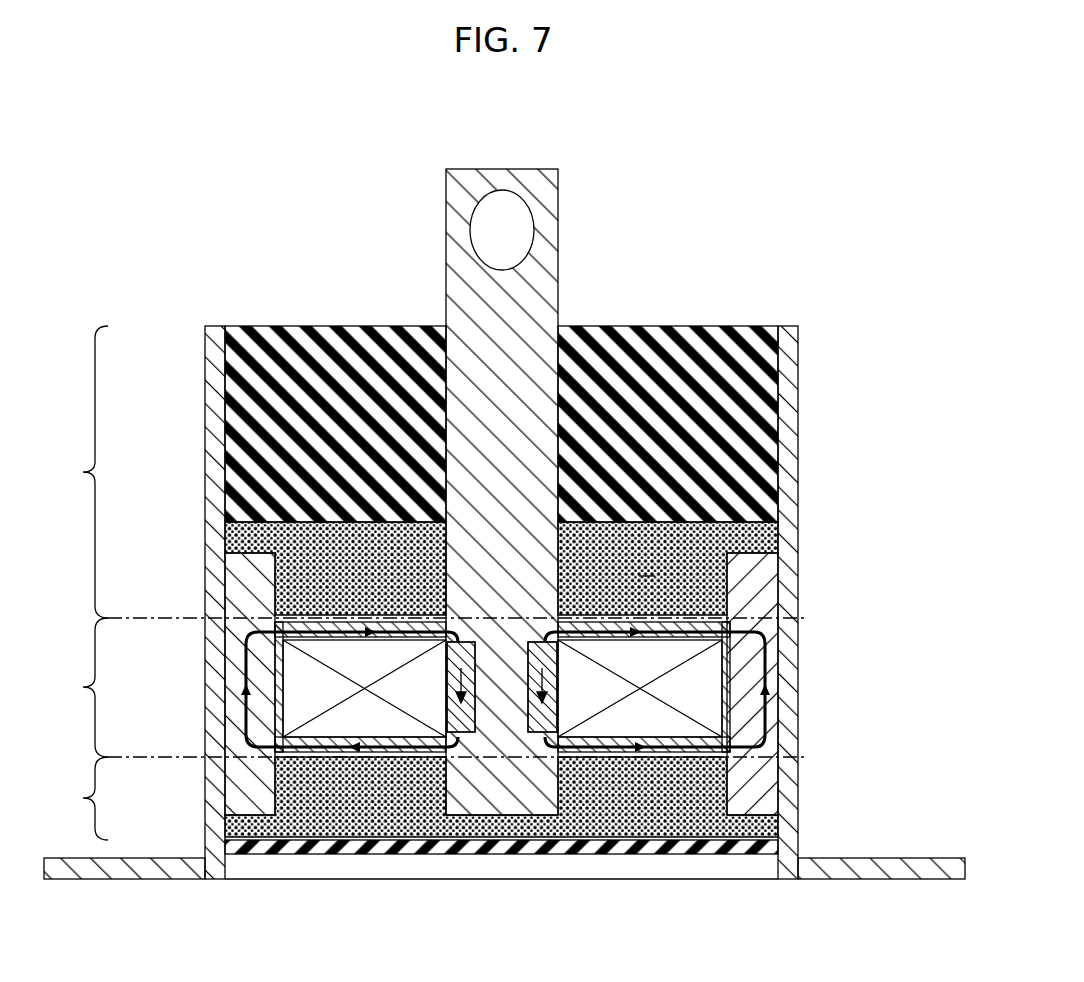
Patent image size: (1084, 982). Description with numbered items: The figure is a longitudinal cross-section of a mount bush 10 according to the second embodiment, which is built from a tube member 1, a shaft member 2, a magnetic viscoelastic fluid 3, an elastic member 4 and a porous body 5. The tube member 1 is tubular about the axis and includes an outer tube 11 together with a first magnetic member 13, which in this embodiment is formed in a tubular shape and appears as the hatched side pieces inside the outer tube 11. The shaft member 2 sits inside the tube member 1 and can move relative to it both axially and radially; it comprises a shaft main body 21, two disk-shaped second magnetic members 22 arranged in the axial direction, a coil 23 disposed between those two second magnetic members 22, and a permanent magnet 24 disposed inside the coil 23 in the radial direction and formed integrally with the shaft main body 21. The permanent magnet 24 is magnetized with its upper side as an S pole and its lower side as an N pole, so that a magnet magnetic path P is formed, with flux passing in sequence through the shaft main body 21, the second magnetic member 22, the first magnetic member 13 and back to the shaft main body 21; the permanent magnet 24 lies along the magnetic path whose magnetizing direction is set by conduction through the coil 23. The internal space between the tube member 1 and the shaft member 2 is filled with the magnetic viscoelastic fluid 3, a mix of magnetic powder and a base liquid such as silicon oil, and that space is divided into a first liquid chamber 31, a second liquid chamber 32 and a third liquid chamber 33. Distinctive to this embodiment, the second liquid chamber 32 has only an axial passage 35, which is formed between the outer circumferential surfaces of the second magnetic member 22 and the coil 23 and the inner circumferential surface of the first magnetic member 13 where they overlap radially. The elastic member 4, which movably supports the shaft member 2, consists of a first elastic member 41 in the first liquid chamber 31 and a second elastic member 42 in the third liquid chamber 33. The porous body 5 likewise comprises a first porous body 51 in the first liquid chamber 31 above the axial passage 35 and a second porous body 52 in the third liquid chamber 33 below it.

The tube member 1 is at (504, 554).
The shaft member 2 is at (524, 453).
The magnetic viscoelastic fluid 3 is at (372, 558).
The elastic member 4 is at (544, 595).
The porous body 5 is at (570, 658).
The mount bush 10 is at (752, 197).
The outer tube 11 is at (906, 858).
The first magnetic member 13 is at (770, 571).
The shaft main body 21 is at (538, 307).
The second magnetic member 22 is at (680, 625).
The coil 23 is at (385, 728).
The permanent magnet 24 is at (466, 728).
The first liquid chamber 31 is at (72, 489).
The second liquid chamber 32 is at (72, 703).
The third liquid chamber 33 is at (72, 814).
The axial passage 35 is at (733, 714).
The first elastic member 41 is at (752, 326).
The second elastic member 42 is at (716, 855).
The first porous body 51 is at (713, 522).
The second porous body 52 is at (753, 812).
The magnet magnetic path P is at (766, 672).